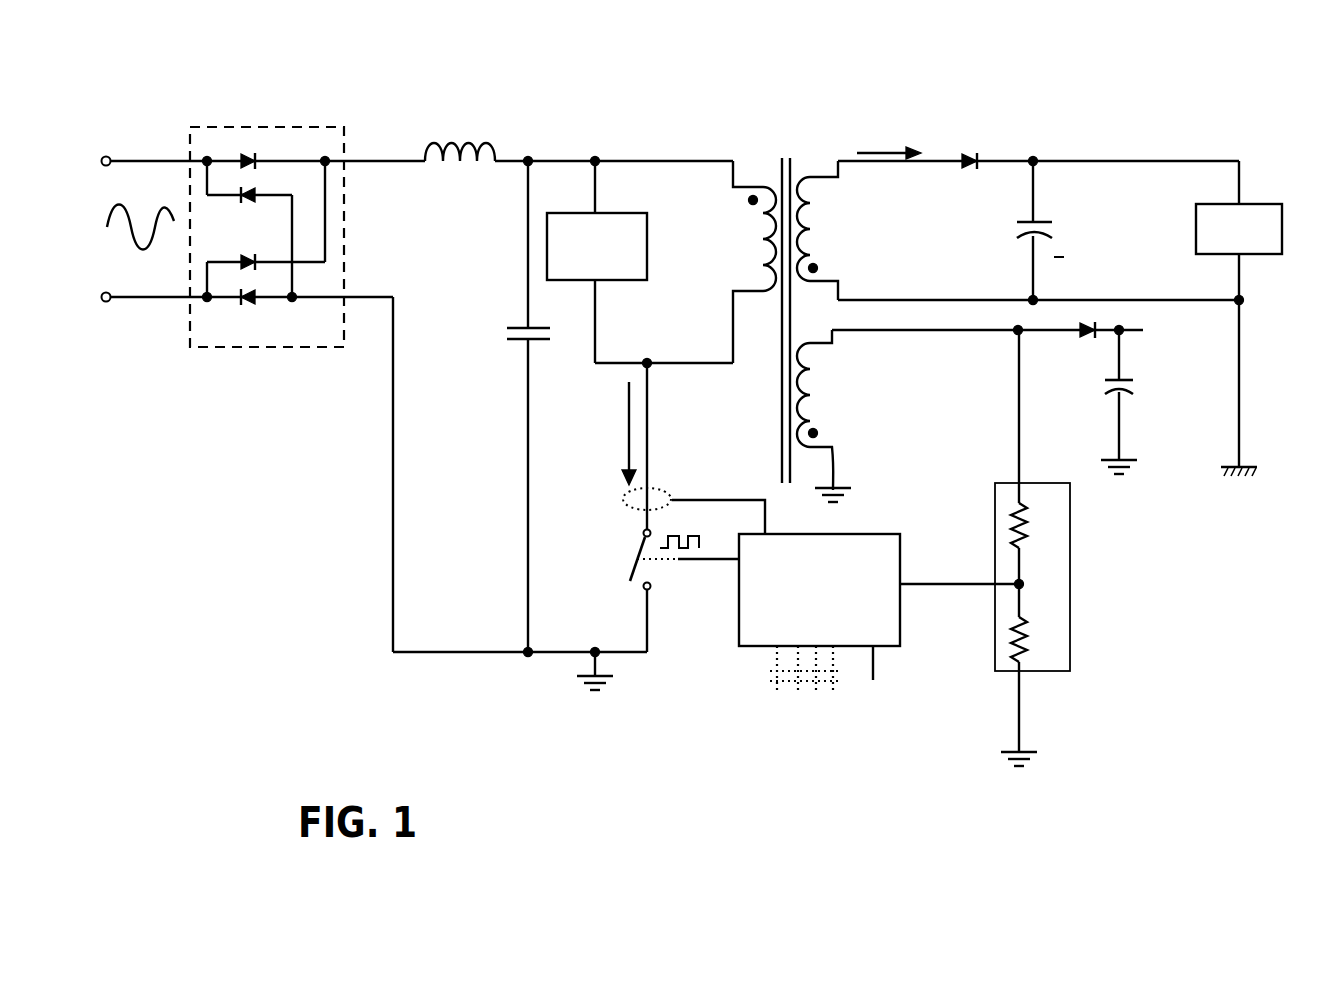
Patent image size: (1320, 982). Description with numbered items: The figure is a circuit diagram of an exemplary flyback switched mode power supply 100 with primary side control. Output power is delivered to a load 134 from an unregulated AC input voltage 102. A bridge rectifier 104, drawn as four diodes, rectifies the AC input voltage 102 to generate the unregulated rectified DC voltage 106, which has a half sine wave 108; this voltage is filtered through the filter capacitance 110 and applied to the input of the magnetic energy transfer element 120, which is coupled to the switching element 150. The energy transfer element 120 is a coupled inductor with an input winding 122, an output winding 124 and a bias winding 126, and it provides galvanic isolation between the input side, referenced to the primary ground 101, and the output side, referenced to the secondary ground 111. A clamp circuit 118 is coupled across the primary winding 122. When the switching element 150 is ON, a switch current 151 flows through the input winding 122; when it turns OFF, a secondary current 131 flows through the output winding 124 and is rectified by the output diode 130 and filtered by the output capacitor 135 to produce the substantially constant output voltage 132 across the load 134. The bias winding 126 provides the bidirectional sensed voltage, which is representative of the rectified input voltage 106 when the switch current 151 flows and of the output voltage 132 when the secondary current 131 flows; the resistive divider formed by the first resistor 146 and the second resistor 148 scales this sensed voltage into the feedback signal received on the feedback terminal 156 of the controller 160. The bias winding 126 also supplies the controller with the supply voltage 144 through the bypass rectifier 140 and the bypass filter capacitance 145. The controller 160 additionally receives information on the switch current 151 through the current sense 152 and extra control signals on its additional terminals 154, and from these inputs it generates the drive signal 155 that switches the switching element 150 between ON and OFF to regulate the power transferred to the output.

The switched mode power supply 100 is at (1191, 53).
The primary ground 101 is at (573, 688).
The AC input voltage 102 is at (80, 212).
The bridge rectifier 104 is at (270, 118).
The rectified DC voltage VRECT 106 is at (377, 174).
The half sine wave 108 is at (474, 118).
The capacitance CF 110 is at (512, 322).
The secondary ground 111 is at (1239, 453).
The clamp circuit 118 is at (604, 286).
The energy transfer element T1 120 is at (776, 148).
The input winding 122 is at (746, 242).
The output winding 124 is at (819, 247).
The bias winding 126 is at (817, 416).
The diode D1 130 is at (973, 144).
The secondary current ISEC 131 is at (874, 146).
The output voltage VO 132 is at (1222, 124).
The load 134 is at (1226, 186).
The capacitor Co 135 is at (1004, 244).
The rectifier 140 is at (1082, 346).
The supply voltage BP 144 is at (1150, 350).
The filter capacitance C1 145 is at (1145, 414).
The resistor R1 146 is at (1040, 545).
The resistor R2 148 is at (1048, 650).
The switching element 150 is at (625, 574).
The switch current 151 is at (620, 452).
The current sense 152 is at (672, 495).
The terminals for additional control signals 154 is at (772, 674).
The DRIVE SIGNAL 155 is at (668, 622).
The feedback terminal FB 156 is at (915, 610).
The controller 160 is at (893, 528).